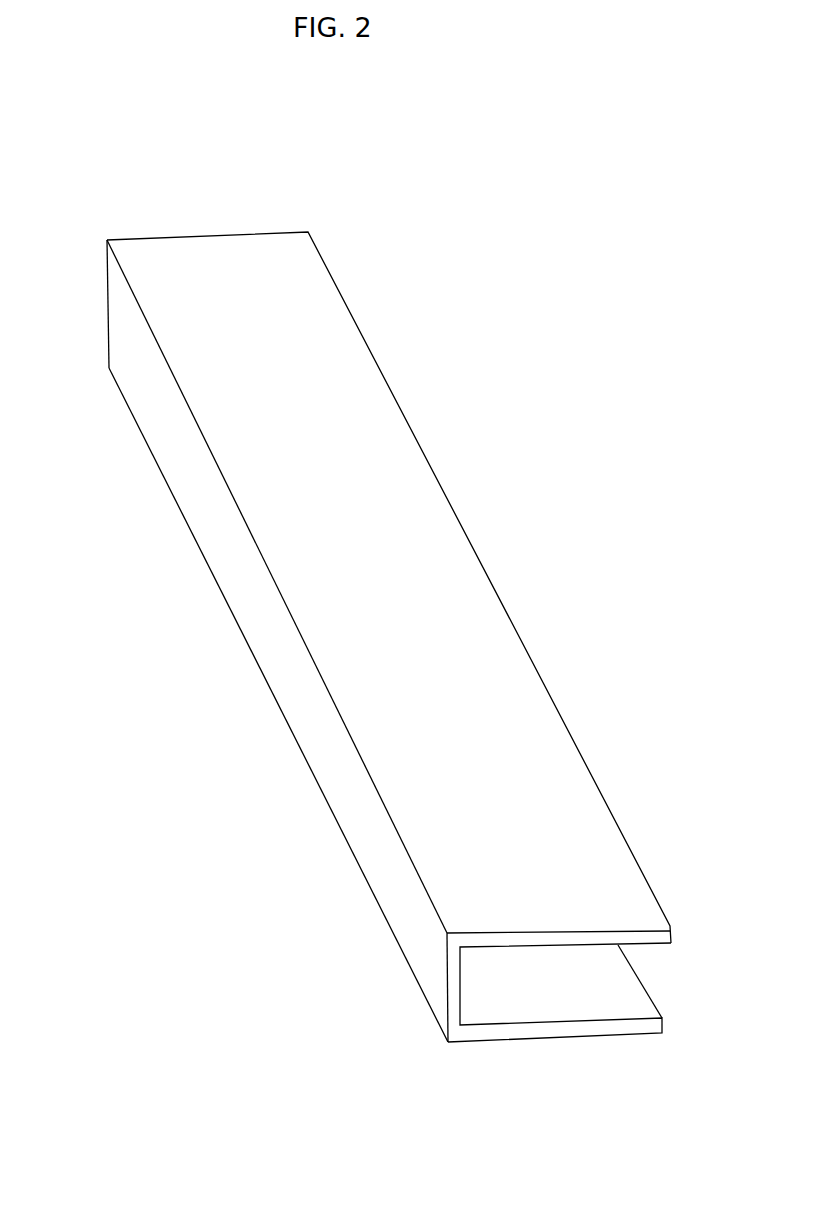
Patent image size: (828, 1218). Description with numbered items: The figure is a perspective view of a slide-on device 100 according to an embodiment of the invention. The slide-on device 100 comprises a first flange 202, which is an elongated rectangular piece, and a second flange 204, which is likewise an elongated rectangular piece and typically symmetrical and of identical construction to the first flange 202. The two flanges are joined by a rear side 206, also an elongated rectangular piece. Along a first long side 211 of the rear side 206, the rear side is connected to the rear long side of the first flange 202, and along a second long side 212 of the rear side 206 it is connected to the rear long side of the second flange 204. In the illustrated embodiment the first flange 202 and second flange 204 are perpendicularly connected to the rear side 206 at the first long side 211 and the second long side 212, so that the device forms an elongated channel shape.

The slide-on device 100 is at (537, 400).
The first flange 202 is at (318, 298).
The second flange 204 is at (565, 1012).
The rear side 206 is at (250, 585).
The first long side 211 is at (200, 440).
The second long side 212 is at (343, 835).